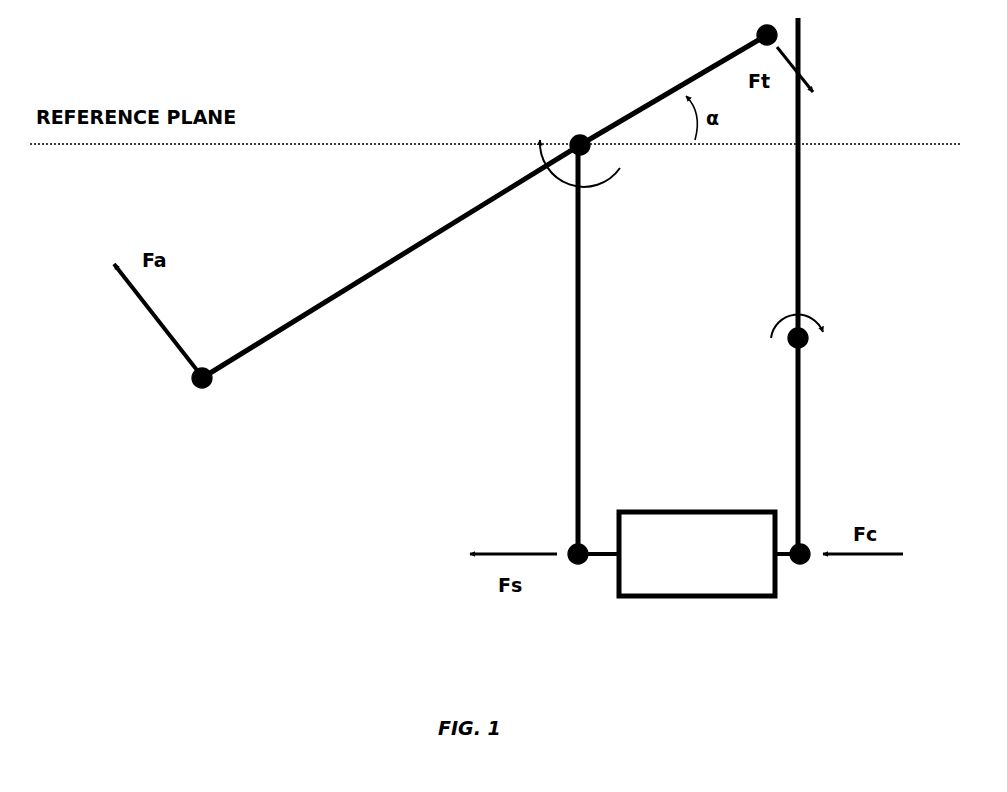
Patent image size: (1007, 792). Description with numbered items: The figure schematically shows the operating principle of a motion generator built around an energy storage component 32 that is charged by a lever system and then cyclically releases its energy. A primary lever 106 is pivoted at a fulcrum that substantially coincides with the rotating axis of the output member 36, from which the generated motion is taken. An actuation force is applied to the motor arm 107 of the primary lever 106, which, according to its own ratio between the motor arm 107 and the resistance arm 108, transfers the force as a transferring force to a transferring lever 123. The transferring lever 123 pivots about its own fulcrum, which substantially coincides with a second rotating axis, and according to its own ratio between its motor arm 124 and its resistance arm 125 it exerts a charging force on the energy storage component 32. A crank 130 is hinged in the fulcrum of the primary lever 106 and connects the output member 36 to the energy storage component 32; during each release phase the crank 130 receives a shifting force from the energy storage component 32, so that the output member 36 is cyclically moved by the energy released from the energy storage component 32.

The energy storage component 32 is at (705, 598).
The output member 36 is at (578, 134).
The primary lever 106 is at (484, 198).
The motor arm 107 is at (388, 265).
The resistance arm 108 is at (678, 86).
The transferring lever 123 is at (825, 250).
The motor arm 124 is at (800, 113).
The resistance arm 125 is at (800, 418).
The crank 130 is at (610, 358).